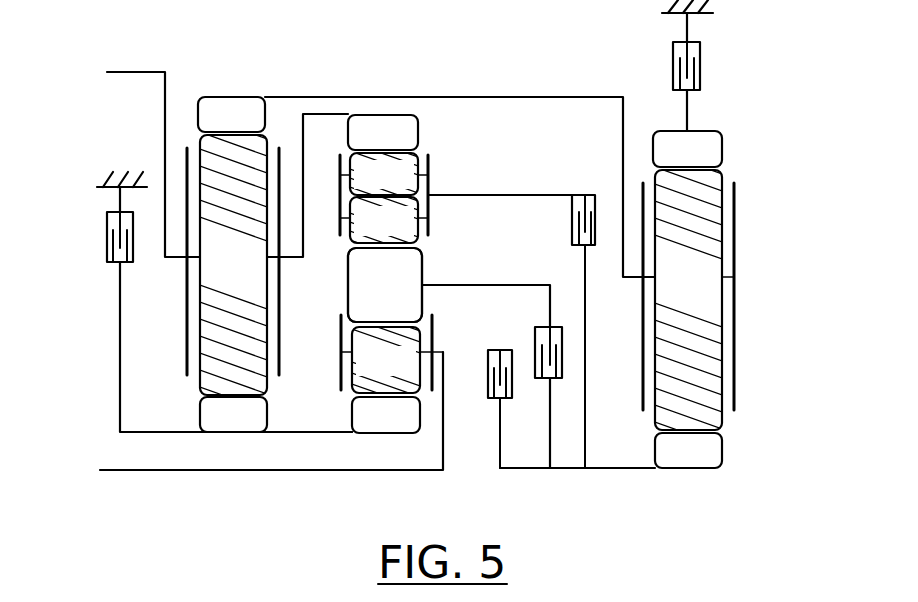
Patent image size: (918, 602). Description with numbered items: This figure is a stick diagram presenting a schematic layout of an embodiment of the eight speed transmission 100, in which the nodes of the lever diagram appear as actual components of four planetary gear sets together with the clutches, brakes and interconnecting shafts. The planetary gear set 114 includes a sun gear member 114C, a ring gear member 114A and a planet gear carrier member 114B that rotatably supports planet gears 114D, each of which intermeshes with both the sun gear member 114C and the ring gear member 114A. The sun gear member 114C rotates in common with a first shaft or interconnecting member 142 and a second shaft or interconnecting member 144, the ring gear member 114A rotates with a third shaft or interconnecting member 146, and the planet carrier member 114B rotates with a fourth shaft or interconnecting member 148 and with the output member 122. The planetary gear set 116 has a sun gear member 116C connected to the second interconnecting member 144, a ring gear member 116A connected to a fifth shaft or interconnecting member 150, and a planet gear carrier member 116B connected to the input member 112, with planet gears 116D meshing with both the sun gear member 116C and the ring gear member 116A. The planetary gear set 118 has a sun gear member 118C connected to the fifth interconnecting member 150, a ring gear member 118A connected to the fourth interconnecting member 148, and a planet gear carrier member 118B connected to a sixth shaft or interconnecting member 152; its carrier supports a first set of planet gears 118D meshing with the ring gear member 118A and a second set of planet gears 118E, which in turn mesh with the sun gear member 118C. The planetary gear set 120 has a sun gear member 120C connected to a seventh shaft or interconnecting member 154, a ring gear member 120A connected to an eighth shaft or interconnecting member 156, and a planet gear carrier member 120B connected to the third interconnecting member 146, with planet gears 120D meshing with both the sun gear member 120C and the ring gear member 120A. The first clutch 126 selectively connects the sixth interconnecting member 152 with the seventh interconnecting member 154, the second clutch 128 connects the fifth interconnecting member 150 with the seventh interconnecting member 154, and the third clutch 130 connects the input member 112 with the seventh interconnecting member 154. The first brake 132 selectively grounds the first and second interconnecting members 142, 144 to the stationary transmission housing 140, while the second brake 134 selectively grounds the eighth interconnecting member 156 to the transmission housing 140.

The eight speed transmission 100 is at (494, 78).
The input member 112 is at (140, 470).
The planetary gear set 114 is at (211, 226).
The ring gear member 114A is at (260, 127).
The planet gear carrier member 114B is at (184, 310).
The sun gear member 114C is at (262, 427).
The planet gears 114D is at (260, 275).
The planetary gear set 116 is at (361, 376).
The ring gear member 116A is at (410, 314).
The planet gear carrier member 116B is at (337, 362).
The sun gear member 116C is at (414, 427).
The planet gears 116D is at (414, 375).
The planetary gear set 118 is at (426, 175).
The ring gear member 118A is at (412, 145).
The planet gear carrier member 118B is at (430, 163).
The sun gear member 118C is at (412, 281).
The first set of planet gears 118D is at (412, 188).
The second set of planet gears 118E is at (412, 234).
The planetary gear set 120 is at (735, 288).
The ring gear member 120A is at (716, 162).
The planet gear carrier member 120B is at (738, 310).
The sun gear member 120C is at (717, 463).
The planet gears 120D is at (716, 295).
The output member 122 is at (108, 80).
The first clutch 126 is at (572, 240).
The second clutch 128 is at (535, 333).
The third clutch 130 is at (488, 405).
The first brake 132 is at (107, 248).
The second brake 134 is at (673, 74).
The transmission housing 140 is at (108, 182).
The first shaft or interconnecting member 142 is at (118, 312).
The second shaft or interconnecting member 144 is at (298, 433).
The third shaft or interconnecting member 146 is at (290, 97).
The fourth shaft or interconnecting member 148 is at (303, 258).
The fifth shaft or interconnecting member 150 is at (520, 285).
The sixth shaft or interconnecting member 152 is at (498, 195).
The seventh shaft or interconnecting member 154 is at (600, 468).
The eighth shaft or interconnecting member 156 is at (690, 110).